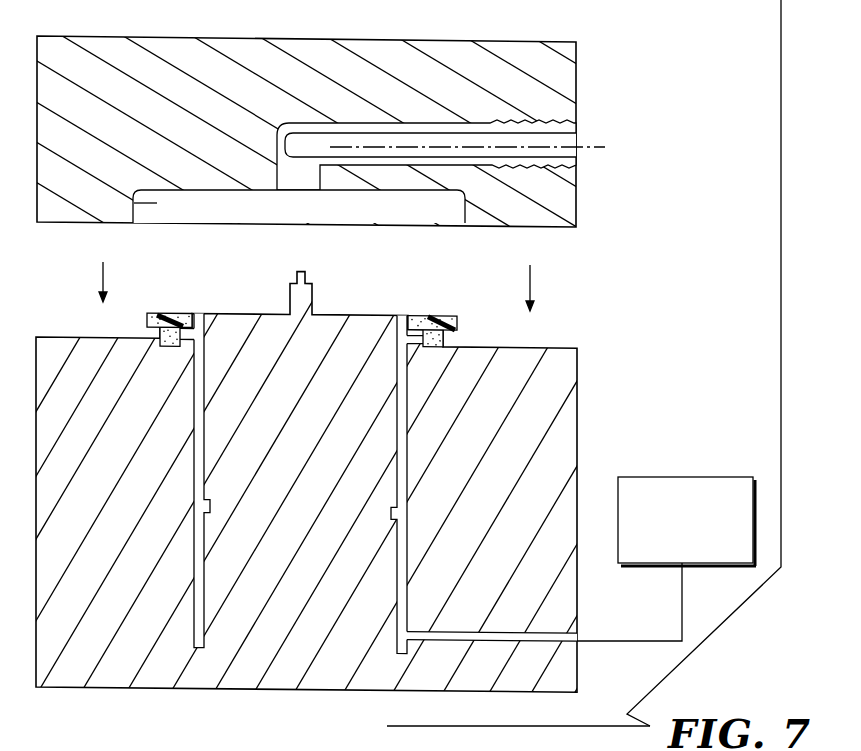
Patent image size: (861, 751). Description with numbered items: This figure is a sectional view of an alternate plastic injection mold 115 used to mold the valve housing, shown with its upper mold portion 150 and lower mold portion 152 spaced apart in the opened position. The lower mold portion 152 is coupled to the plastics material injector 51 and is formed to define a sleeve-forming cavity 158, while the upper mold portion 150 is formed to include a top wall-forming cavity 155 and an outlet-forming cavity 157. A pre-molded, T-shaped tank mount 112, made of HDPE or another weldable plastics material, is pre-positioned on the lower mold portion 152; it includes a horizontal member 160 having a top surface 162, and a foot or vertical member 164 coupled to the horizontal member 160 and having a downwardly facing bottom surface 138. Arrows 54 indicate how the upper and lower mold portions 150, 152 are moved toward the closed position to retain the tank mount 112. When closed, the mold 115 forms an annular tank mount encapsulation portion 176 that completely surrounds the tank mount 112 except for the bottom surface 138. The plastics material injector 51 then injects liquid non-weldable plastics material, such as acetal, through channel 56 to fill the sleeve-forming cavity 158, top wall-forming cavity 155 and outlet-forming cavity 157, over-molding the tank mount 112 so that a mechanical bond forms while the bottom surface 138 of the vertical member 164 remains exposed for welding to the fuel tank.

The plastics material injector 51 is at (698, 477).
The arrows 54 is at (100, 280).
The channel 56 is at (521, 657).
The tank mount 112 is at (481, 325).
The plastic injection mold 115 is at (637, 171).
The bottom surface 138 is at (172, 368).
The upper mold portion 150 is at (50, 227).
The lower mold portion 152 is at (100, 694).
The top wall-forming cavity 155 is at (207, 190).
The outlet-forming cavity 157 is at (357, 131).
The sleeve-forming cavity 158 is at (192, 565).
The horizontal member 160 is at (152, 317).
The top surface 162 is at (176, 312).
The vertical member 164 is at (160, 333).
The tank mount encapsulation portion 176 is at (157, 203).